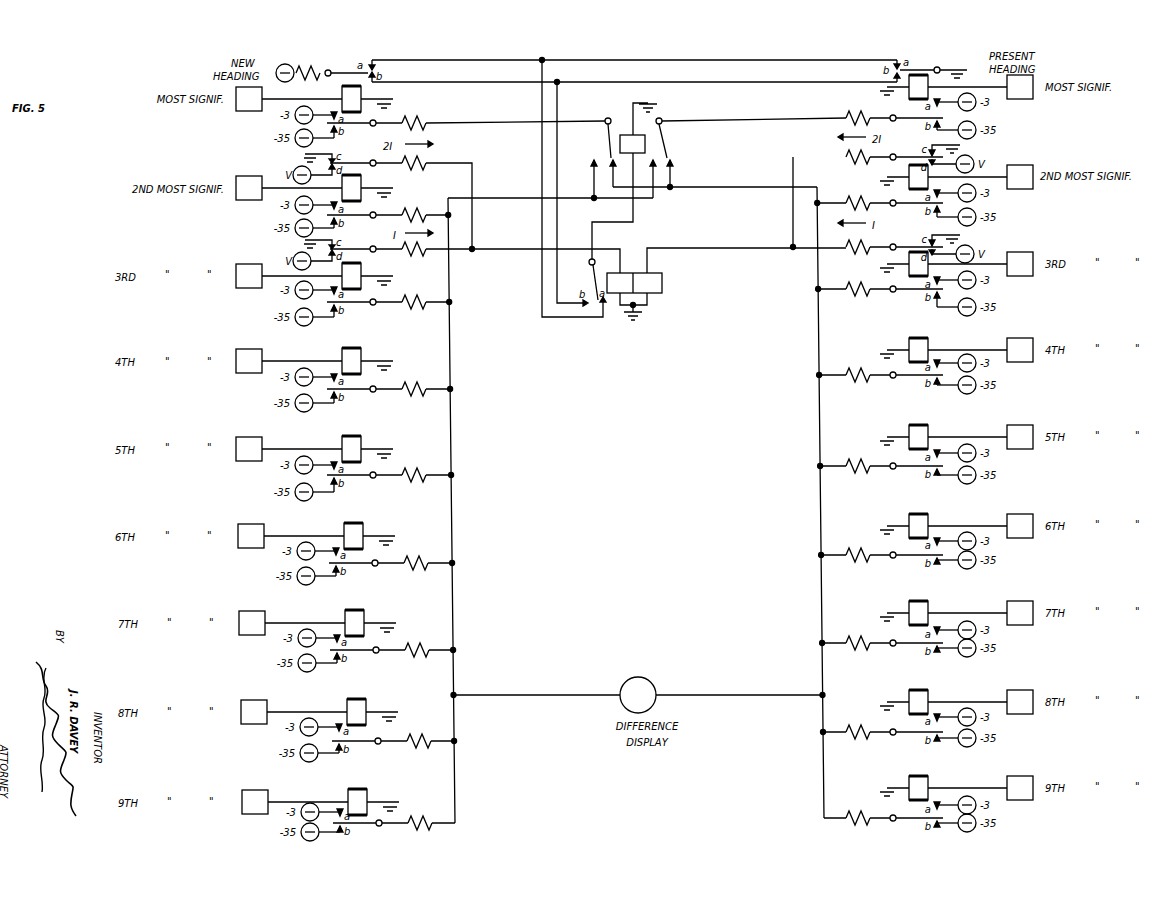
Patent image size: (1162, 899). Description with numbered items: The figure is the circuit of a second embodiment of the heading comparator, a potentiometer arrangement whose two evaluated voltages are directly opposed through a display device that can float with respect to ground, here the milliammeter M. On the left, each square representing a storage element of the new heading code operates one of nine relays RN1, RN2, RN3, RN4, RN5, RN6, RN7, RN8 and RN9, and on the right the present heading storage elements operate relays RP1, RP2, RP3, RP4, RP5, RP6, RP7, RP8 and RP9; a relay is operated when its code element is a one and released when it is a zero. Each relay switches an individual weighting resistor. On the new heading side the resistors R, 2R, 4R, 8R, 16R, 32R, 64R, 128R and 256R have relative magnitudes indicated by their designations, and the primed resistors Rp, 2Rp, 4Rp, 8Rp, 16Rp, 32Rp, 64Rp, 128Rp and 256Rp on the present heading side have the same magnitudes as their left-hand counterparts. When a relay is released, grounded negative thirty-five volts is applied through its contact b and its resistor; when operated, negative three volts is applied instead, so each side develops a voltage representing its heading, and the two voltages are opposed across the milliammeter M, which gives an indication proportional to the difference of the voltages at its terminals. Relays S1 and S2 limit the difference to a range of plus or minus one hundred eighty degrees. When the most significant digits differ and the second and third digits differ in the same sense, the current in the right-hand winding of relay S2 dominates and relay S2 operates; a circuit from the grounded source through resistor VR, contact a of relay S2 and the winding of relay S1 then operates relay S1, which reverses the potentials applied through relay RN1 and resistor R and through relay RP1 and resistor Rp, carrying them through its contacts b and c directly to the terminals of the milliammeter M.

The resistor VR is at (322, 67).
The relay RN1 is at (351, 99).
The relay RN2 is at (351, 188).
The relay RN3 is at (351, 276).
The relay RN4 is at (351, 361).
The relay RN5 is at (351, 449).
The relay RN6 is at (353, 536).
The relay RN7 is at (354, 623).
The relay RN8 is at (356, 712).
The relay RN9 is at (357, 802).
The relay RP1 is at (918, 87).
The relay RP2 is at (918, 177).
The relay RP3 is at (918, 264).
The relay RP4 is at (918, 350).
The relay RP5 is at (918, 437).
The relay RP6 is at (918, 526).
The relay RP7 is at (918, 613).
The relay RP8 is at (918, 702).
The relay RP9 is at (918, 788).
The relay S1 is at (635, 150).
The relay S2 is at (625, 289).
The milliammeter M is at (638, 695).
The resistor R is at (414, 114).
The resistor 2R is at (414, 206).
The resistor 4R is at (414, 292).
The resistor 8R is at (414, 380).
The resistor 16R is at (413, 466).
The resistor 32R is at (415, 554).
The resistor 64R is at (416, 641).
The resistor 128R is at (417, 732).
The resistor 256R is at (417, 814).
The resistor Rp is at (858, 108).
The resistor 2Rp is at (857, 193).
The resistor 4Rp is at (857, 280).
The resistor 8Rp is at (857, 366).
The resistor 16Rp is at (854, 456).
The resistor 32Rp is at (854, 545).
The resistor 64Rp is at (853, 633).
The resistor 128Rp is at (853, 722).
The resistor 256Rp is at (852, 809).